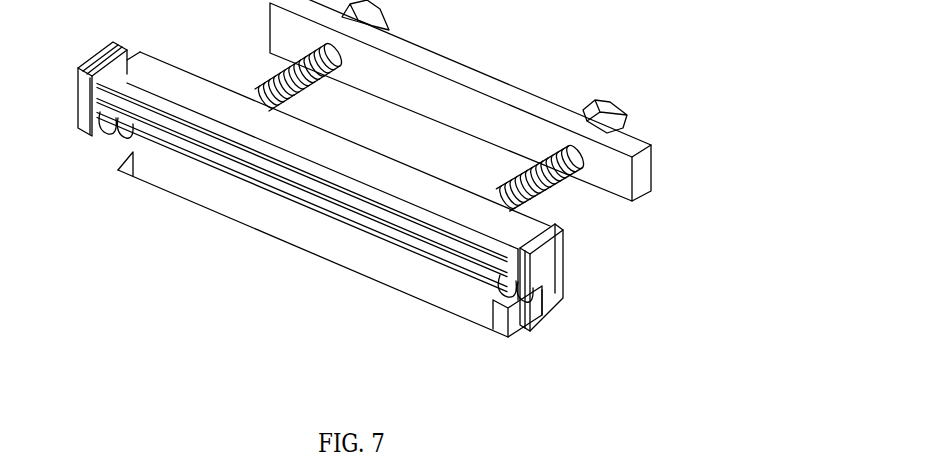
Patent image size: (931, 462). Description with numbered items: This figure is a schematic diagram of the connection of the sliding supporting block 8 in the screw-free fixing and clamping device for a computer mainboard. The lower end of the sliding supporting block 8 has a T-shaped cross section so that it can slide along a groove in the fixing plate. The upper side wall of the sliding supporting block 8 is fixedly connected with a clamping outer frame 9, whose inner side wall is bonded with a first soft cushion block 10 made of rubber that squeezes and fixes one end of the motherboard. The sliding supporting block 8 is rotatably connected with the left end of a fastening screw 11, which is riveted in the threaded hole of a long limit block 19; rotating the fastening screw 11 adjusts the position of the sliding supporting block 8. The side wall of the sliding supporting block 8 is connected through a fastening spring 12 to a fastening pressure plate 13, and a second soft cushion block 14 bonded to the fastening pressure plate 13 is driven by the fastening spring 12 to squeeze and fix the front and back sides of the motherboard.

The sliding supporting block 8 is at (240, 212).
The clamping outer frame 9 is at (383, 173).
The first soft cushion block 10 is at (148, 115).
The fastening screw 11 is at (540, 200).
The fastening spring 12 is at (497, 291).
The fastening pressure plate 13 is at (557, 290).
The second soft cushion block 14 is at (92, 106).
The long limit block 19 is at (438, 92).